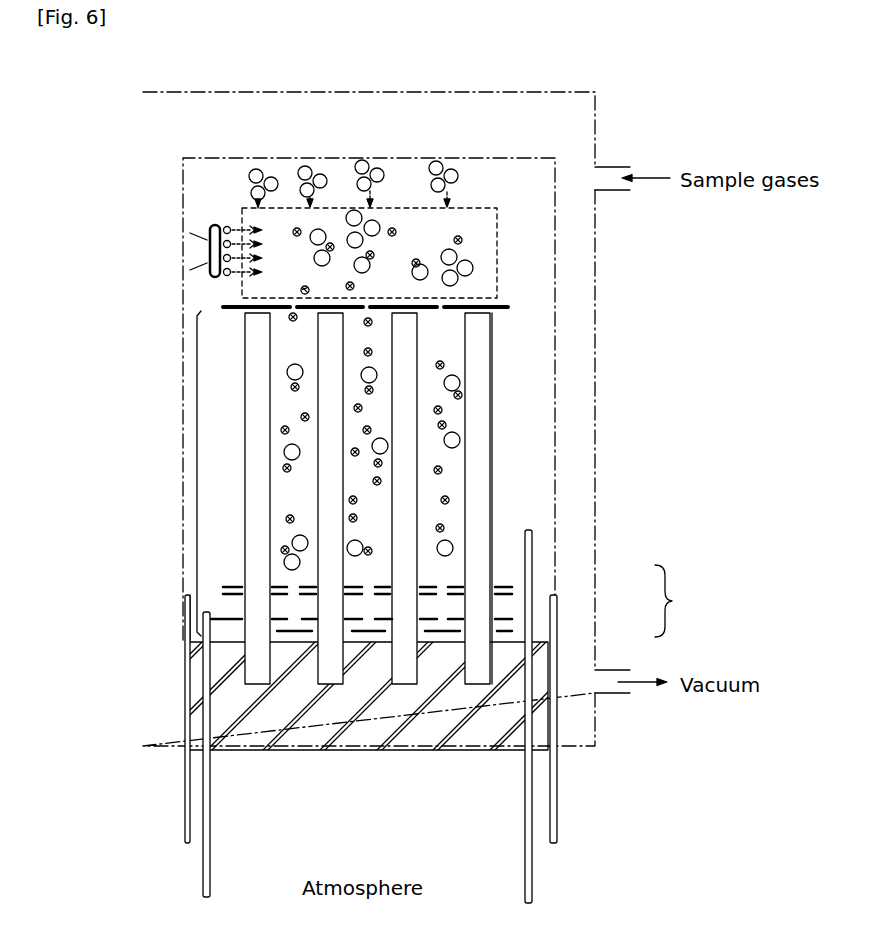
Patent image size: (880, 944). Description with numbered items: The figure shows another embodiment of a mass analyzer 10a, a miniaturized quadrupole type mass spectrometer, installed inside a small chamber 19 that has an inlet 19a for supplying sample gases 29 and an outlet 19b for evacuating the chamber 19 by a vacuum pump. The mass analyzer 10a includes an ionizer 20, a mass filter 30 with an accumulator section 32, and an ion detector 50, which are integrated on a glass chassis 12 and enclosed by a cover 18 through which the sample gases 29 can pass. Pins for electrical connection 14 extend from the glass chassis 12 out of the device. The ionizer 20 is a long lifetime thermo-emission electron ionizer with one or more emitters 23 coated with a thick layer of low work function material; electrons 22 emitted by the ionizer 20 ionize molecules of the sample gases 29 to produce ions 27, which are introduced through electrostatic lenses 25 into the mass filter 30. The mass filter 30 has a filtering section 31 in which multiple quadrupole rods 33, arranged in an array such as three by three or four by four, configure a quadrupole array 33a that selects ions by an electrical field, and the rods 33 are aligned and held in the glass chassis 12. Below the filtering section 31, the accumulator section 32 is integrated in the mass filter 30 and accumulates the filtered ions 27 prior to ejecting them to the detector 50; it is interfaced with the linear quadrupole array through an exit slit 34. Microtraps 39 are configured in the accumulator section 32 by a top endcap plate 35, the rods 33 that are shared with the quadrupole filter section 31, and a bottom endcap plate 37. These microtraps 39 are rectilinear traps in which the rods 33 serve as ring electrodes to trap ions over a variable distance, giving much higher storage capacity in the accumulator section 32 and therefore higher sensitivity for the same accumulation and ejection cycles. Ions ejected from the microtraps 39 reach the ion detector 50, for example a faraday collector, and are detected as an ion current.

The mass analyzer 10a is at (229, 144).
The glass chassis 12 is at (538, 718).
The pins for electrical connection 14 is at (534, 540).
The cover 18 is at (514, 158).
The chamber 19 is at (596, 397).
The inlet 19a is at (614, 170).
The outlet 19b is at (614, 682).
The ionizer 20 is at (178, 247).
The electrons 22 is at (228, 225).
The emitters 23 is at (214, 224).
The electrostatic lenses 25 is at (506, 303).
The ions 27 is at (394, 228).
The sample gases 29 is at (449, 178).
The mass filter 30 is at (537, 452).
The filtering section 31 is at (196, 388).
The accumulator section 32 is at (192, 594).
The rods 33 is at (480, 338).
The quadrupole array 33a is at (502, 352).
The exit slit 34 is at (497, 586).
The top endcap plate 35 is at (516, 591).
The bottom endcap plate 37 is at (503, 628).
The microtraps 39 is at (676, 601).
The ion detector 50 is at (297, 632).